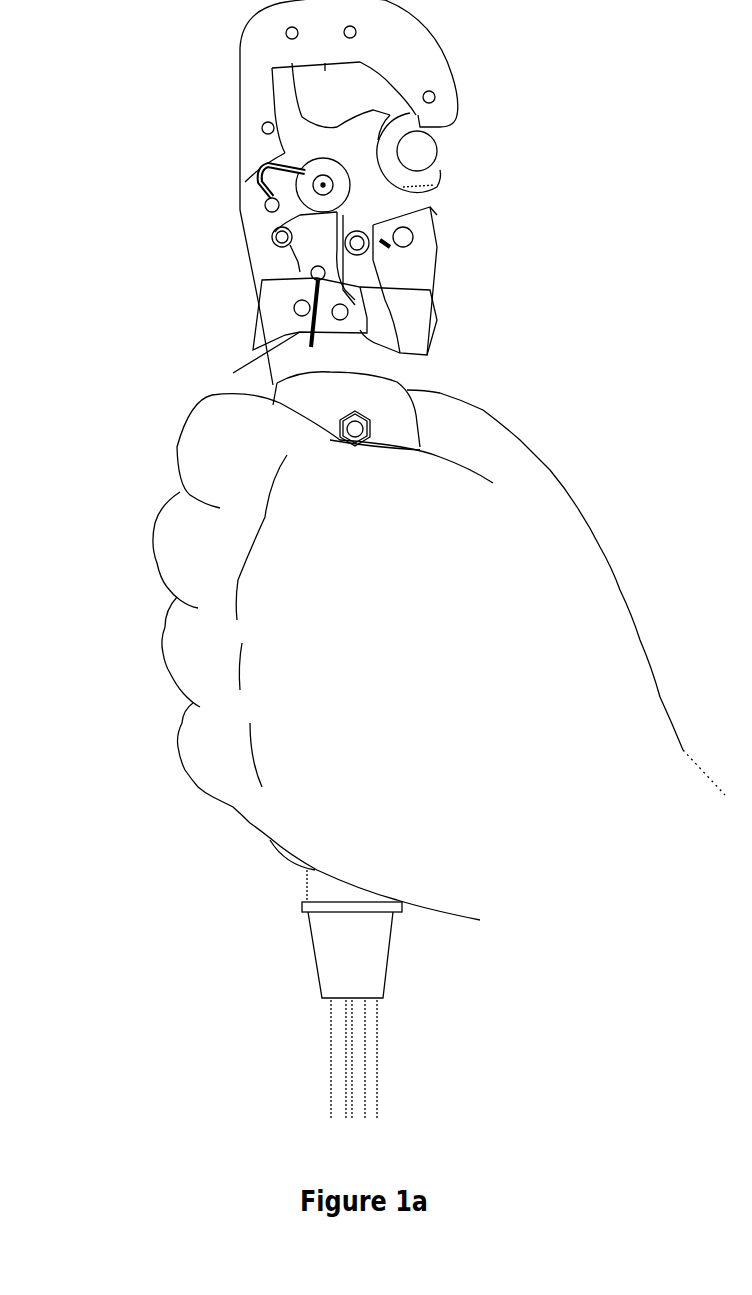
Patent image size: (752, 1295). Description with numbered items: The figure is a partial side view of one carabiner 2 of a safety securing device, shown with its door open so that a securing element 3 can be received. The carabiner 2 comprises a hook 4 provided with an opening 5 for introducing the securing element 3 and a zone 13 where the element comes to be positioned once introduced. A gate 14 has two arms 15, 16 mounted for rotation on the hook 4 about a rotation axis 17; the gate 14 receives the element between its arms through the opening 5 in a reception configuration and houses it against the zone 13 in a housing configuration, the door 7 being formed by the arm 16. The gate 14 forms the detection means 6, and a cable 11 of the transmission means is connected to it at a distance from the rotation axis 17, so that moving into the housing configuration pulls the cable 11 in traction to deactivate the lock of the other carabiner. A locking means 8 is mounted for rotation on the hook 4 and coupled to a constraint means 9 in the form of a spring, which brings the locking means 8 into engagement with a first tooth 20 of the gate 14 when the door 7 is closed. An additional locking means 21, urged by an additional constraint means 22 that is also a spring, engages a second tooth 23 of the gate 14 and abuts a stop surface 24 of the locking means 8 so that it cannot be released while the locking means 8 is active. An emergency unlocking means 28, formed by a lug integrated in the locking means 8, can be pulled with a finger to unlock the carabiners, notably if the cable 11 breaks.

The carabiner 2 is at (460, 27).
The securing element 3 is at (440, 155).
The hook 4 is at (440, 47).
The opening 5 is at (458, 137).
The detection means 6 is at (445, 175).
The door 7 is at (448, 200).
The locking means 8 is at (327, 228).
The constraint means 9 is at (300, 268).
The cable 11 is at (290, 333).
The receiving zone 13 is at (240, 57).
The gate 14 is at (440, 190).
The first arm 15 is at (440, 119).
The second arm 16 is at (437, 213).
The rotation axis 17 is at (322, 185).
The first tooth 20 is at (290, 207).
The additional locking means 21 is at (440, 325).
The additional constraint means 22 is at (440, 264).
The second tooth 23 is at (437, 245).
The stop surface 24 is at (429, 290).
The emergency unlocking means 28 is at (305, 312).